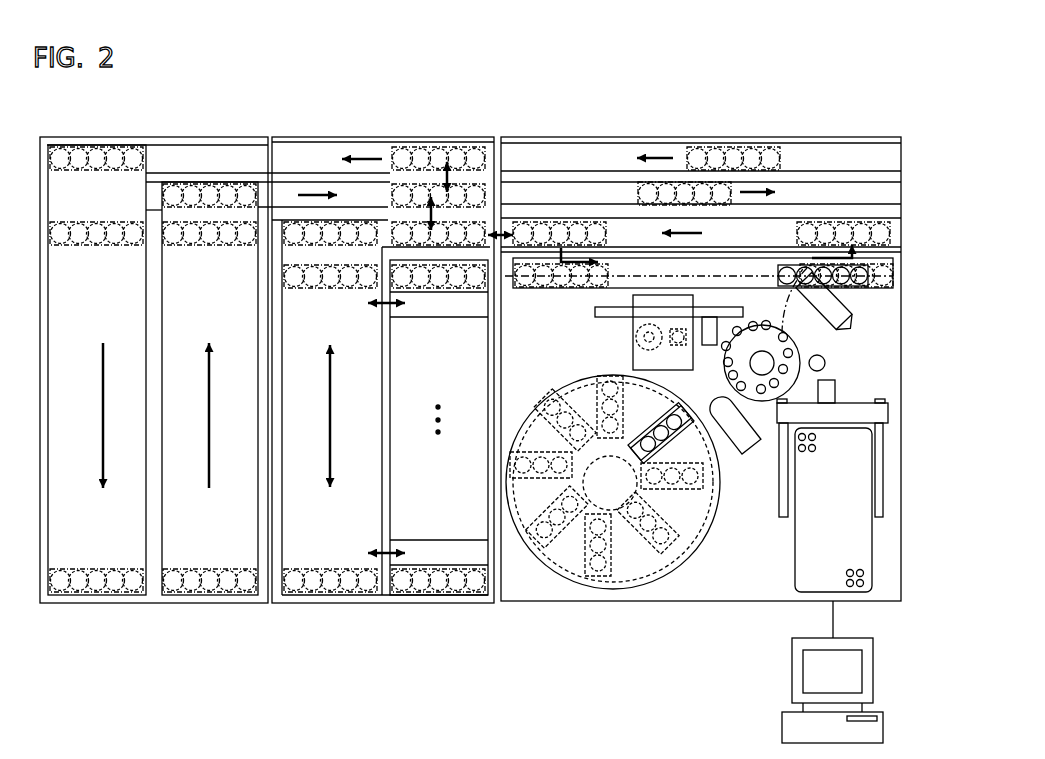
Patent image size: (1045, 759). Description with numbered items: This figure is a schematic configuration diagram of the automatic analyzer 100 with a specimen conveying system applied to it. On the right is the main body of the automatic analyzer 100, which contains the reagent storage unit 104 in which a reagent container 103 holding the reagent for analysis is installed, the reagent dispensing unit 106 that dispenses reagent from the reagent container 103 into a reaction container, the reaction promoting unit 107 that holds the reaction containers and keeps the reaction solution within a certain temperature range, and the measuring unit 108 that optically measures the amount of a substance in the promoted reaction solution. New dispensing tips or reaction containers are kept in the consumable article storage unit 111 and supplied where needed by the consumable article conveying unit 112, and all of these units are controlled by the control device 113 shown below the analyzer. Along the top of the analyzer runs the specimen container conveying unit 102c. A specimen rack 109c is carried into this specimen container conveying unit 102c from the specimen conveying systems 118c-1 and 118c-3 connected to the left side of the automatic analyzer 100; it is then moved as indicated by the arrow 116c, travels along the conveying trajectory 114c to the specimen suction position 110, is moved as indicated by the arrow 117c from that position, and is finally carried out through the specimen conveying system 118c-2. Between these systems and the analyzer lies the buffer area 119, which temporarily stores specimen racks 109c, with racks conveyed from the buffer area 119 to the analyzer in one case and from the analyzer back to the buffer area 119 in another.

The automatic analyzer 100 is at (548, 603).
The specimen container conveying unit 102c is at (662, 265).
The reagent container 103 is at (613, 560).
The reagent storage unit 104 is at (597, 593).
The reagent dispensing unit 106 is at (725, 413).
The reaction promoting unit 107 is at (797, 347).
The measuring unit 108 is at (645, 358).
The specimen rack 109c is at (862, 268).
The specimen suction position 110 is at (806, 270).
The consumable article storage unit 111 is at (865, 548).
The consumable article conveying unit 112 is at (865, 413).
The control device 113 is at (883, 733).
The conveying trajectory 114c is at (632, 265).
The arrow 116c is at (560, 250).
The arrow 117c is at (852, 258).
The specimen conveying system 118c-1 is at (213, 596).
The specimen conveying system 118c-2 is at (100, 596).
The specimen conveying system 118c-3 is at (506, 139).
The buffer area 119 is at (387, 602).